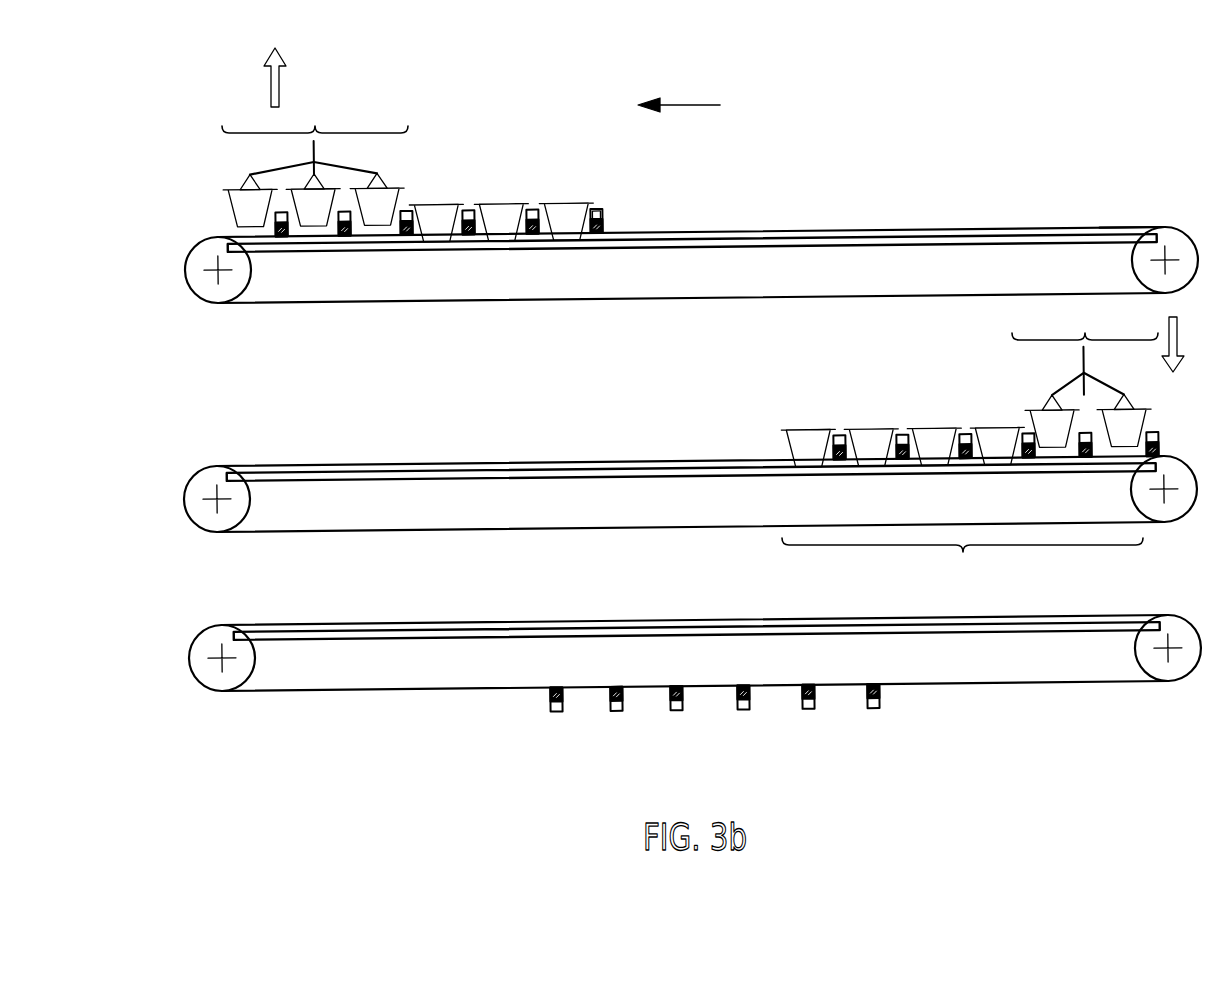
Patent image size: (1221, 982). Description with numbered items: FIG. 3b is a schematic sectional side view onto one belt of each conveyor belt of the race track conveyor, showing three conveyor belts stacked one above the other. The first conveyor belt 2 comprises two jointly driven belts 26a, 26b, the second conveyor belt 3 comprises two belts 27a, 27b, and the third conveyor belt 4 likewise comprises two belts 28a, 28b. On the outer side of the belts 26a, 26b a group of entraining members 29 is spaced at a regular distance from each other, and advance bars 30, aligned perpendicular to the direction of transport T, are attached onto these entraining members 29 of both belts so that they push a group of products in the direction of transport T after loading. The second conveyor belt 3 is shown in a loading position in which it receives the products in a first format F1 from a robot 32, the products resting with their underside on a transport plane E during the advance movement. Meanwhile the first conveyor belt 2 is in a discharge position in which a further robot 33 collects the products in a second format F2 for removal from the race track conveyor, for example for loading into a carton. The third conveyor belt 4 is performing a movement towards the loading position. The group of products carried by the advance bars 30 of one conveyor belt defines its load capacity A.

The first conveyor belt 2 is at (170, 273).
The second conveyor belt 3 is at (170, 501).
The third conveyor belt 4 is at (170, 661).
The belt 26a is at (692, 211).
The belt 26b is at (893, 230).
The belt 27a is at (691, 443).
The belt 27b is at (447, 466).
The belt 28a is at (697, 603).
The belt 28b is at (448, 625).
The entraining member 29 is at (624, 204).
The advance bar 30 is at (602, 210).
The robot 32 is at (1058, 391).
The further robot 33 is at (273, 167).
The transport plane E is at (1081, 229).
The direction of transport T is at (689, 104).
The load capacity A is at (962, 563).
The first format F1 is at (1085, 320).
The second format F2 is at (315, 113).